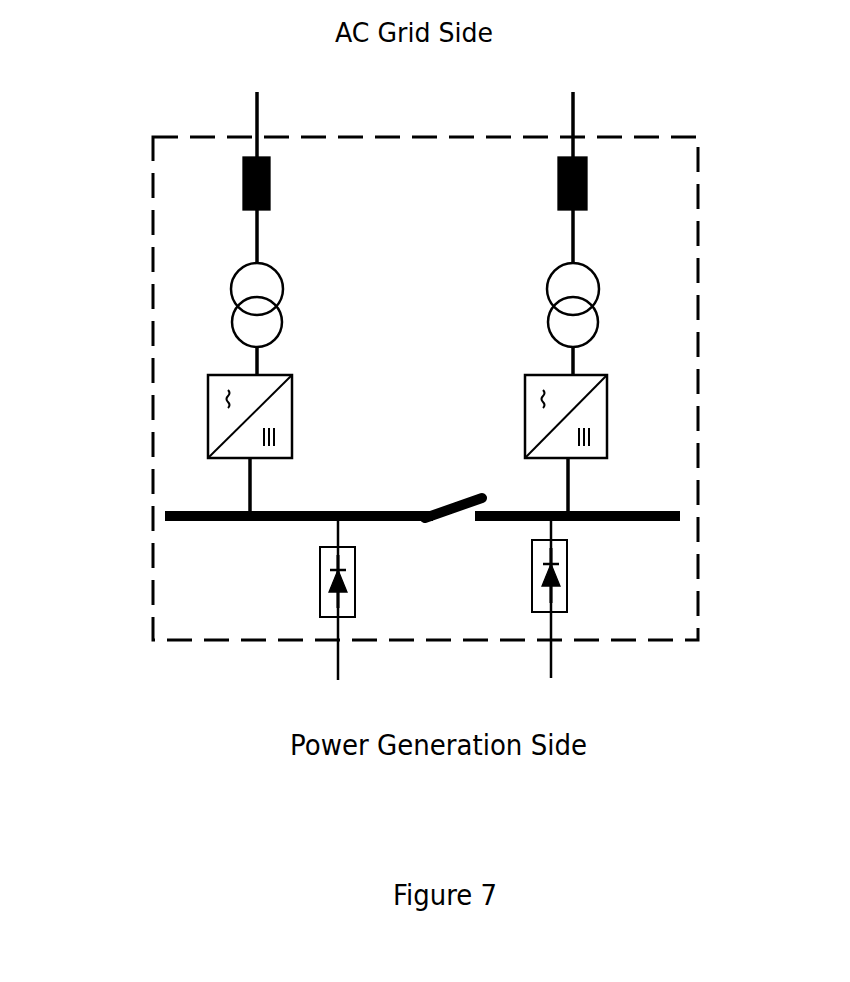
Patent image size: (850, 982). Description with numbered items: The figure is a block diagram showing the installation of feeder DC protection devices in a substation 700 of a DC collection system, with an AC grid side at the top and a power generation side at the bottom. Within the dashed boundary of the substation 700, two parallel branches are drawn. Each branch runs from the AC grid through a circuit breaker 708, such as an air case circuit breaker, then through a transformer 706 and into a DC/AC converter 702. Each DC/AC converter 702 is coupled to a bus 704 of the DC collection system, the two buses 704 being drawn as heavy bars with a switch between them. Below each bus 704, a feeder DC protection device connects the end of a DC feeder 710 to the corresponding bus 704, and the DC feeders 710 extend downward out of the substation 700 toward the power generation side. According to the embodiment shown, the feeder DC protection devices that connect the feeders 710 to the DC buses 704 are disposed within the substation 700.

The substation 700 is at (700, 235).
The circuit breaker 708 is at (270, 184).
The transformer 706 is at (292, 307).
The DC/AC converter 702 is at (292, 400).
The bus 704 is at (290, 510).
The DC feeder 710 is at (335, 660).